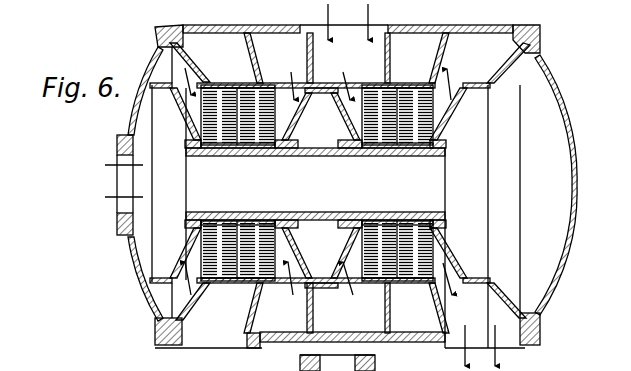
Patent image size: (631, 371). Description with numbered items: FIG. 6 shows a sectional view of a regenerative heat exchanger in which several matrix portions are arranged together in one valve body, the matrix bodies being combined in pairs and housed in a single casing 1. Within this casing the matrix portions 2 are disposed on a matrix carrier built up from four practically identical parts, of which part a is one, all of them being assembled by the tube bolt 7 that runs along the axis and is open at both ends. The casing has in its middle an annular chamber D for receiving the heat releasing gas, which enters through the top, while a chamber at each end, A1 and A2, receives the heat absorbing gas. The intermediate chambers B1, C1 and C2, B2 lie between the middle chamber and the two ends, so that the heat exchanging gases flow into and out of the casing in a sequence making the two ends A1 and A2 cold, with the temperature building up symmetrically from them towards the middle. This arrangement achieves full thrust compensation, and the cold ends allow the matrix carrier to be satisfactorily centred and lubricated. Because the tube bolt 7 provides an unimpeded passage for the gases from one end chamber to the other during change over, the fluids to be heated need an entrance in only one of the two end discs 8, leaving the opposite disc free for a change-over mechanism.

The casing 1 is at (165, 327).
The coils 2 is at (247, 135).
The tube bolt 7 is at (282, 157).
The end disc 8 is at (128, 119).
The end A1 is at (165, 70).
The end A2 is at (527, 83).
The chamber B1 is at (234, 68).
The chamber B2 is at (473, 68).
The chamber C1 is at (284, 68).
The chamber C2 is at (415, 68).
The central inlet chamber D is at (350, 68).
The matrix carrier part a is at (190, 123).